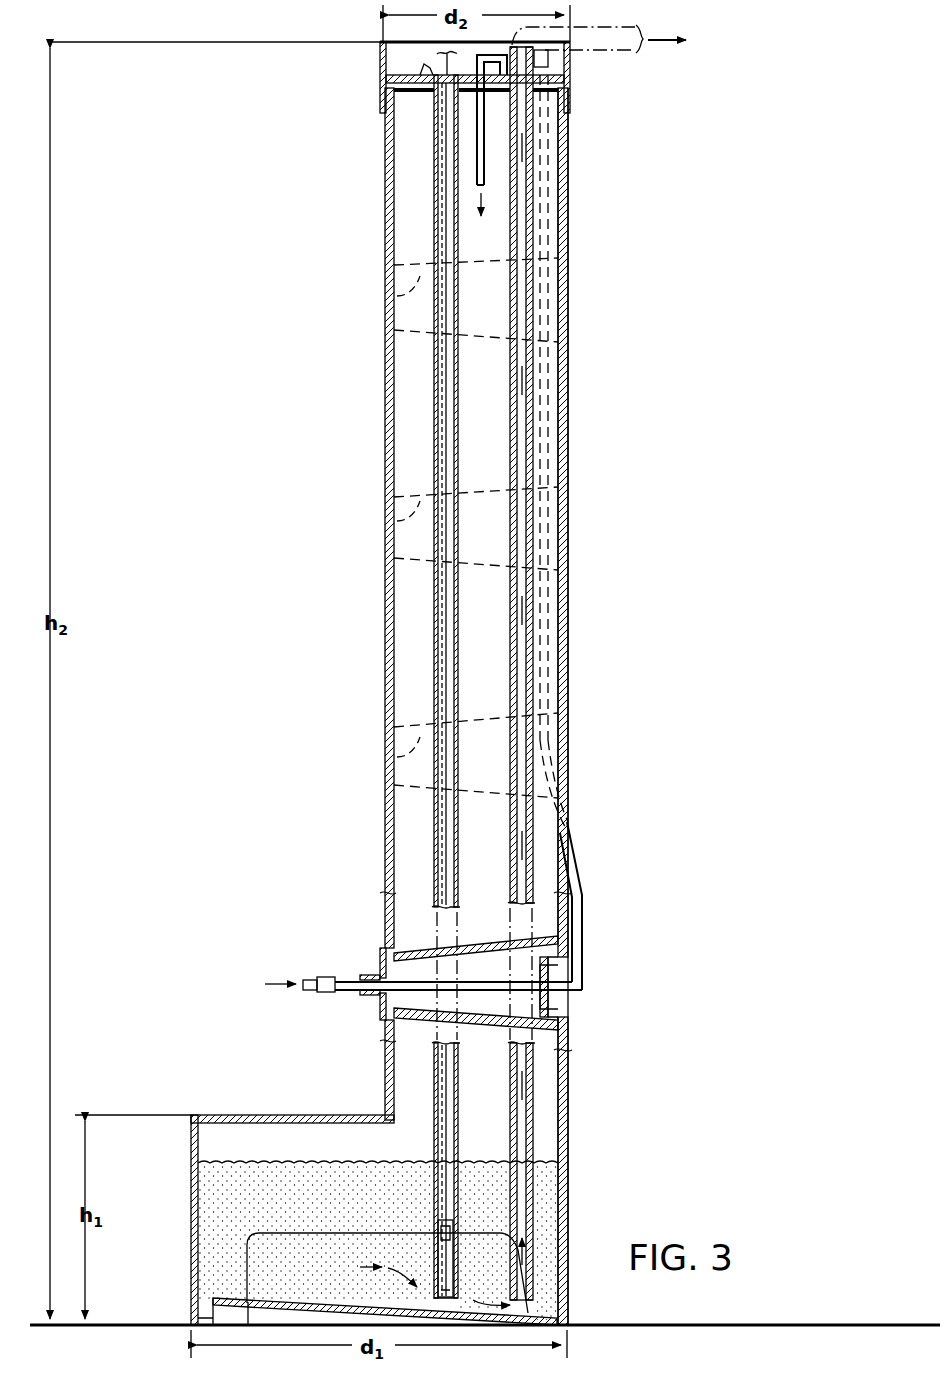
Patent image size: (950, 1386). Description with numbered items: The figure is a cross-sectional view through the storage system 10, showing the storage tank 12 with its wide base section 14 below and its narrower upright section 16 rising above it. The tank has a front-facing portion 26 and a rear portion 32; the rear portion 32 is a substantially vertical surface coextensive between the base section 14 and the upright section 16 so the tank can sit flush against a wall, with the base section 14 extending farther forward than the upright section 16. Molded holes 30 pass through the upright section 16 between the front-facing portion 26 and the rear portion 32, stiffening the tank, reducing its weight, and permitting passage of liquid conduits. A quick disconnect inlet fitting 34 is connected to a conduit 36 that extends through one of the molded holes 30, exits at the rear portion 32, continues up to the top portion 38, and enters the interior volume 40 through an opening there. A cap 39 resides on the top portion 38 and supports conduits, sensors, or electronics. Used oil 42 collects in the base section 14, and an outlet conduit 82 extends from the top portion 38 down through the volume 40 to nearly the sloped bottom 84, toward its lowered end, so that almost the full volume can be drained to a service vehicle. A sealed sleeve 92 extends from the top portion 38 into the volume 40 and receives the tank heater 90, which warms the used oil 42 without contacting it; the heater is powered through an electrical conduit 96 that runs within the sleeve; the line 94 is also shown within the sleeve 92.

The storage system 10 is at (723, 103).
The storage tank 12 is at (571, 456).
The base section 14 is at (190, 1196).
The upright section 16 is at (570, 538).
The front-facing portion 26 is at (385, 627).
The molded holes 30 is at (396, 296).
The rear portion 32 is at (569, 637).
The quick disconnect inlet fitting 34 is at (327, 977).
The conduit 36 is at (480, 154).
The top portion 38 is at (405, 92).
The cap 39 is at (379, 70).
The volume 40 is at (500, 654).
The used oil 42 is at (236, 1163).
The outlet conduit 82 is at (597, 52).
The bottom 84 is at (287, 1303).
The tank heater 90 is at (432, 1252).
The sealed sleeve 92 is at (435, 388).
The inner tube centerline 94 is at (443, 430).
The electrical conduit 96 is at (447, 398).